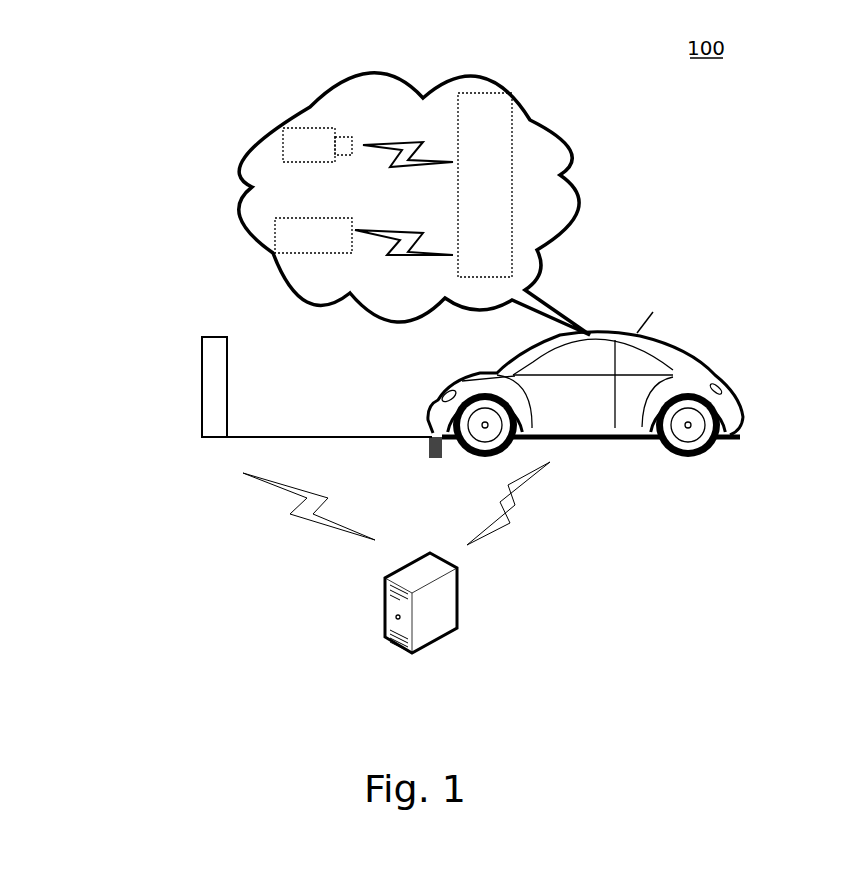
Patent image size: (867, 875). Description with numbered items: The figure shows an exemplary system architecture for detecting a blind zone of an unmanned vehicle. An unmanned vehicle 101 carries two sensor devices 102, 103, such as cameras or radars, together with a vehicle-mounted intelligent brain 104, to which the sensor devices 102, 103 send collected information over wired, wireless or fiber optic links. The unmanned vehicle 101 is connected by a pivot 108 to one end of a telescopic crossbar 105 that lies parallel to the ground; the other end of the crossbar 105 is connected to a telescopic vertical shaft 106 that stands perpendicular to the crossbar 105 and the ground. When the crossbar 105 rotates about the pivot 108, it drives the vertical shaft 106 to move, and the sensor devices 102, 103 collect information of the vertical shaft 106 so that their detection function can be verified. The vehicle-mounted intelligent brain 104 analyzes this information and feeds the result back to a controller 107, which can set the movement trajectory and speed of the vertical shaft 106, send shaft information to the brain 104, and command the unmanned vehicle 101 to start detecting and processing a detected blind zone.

The unmanned vehicle 101 is at (602, 438).
The sensor device 102 is at (319, 154).
The sensor device 103 is at (313, 245).
The vehicle-mounted intelligent brain 104 is at (486, 196).
The telescopic crossbar 105 is at (277, 437).
The telescopic vertical shaft 106 is at (200, 393).
The controller 107 is at (457, 628).
The pivot 108 is at (437, 460).